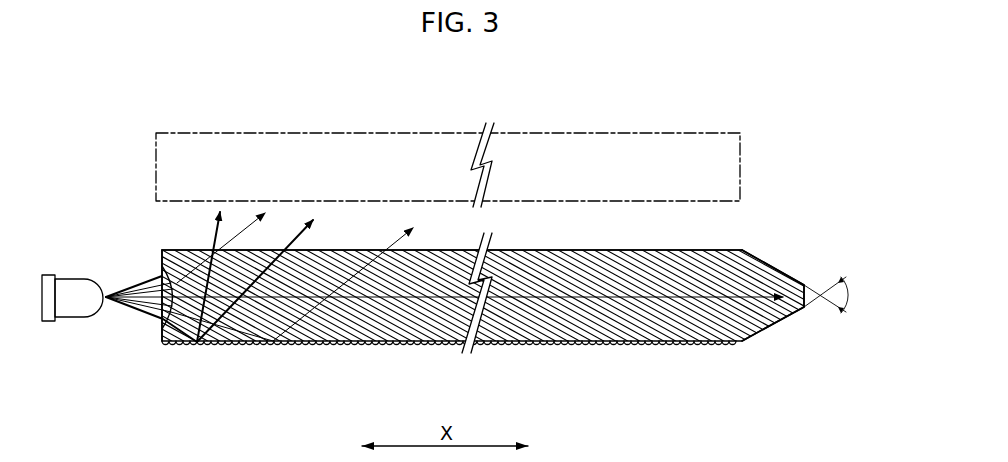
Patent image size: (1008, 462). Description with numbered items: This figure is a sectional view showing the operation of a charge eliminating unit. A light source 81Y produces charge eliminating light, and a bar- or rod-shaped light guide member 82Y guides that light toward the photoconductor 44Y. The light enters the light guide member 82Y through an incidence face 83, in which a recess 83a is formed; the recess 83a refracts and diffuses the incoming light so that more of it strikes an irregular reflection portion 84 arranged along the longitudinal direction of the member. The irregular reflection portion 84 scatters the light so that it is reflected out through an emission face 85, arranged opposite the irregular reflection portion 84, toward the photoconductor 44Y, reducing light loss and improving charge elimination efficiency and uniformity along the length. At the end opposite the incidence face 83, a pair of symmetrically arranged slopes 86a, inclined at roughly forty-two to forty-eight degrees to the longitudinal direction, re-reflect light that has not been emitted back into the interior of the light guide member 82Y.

The photoconductor 44Y is at (278, 133).
The light source 81Y is at (75, 318).
The light guide member 82Y is at (676, 375).
The incidence face 83 is at (160, 257).
The recess 83a is at (153, 273).
The irregular reflection portion 84 is at (395, 344).
The emission face 85 is at (722, 250).
The slopes 86a is at (773, 324).